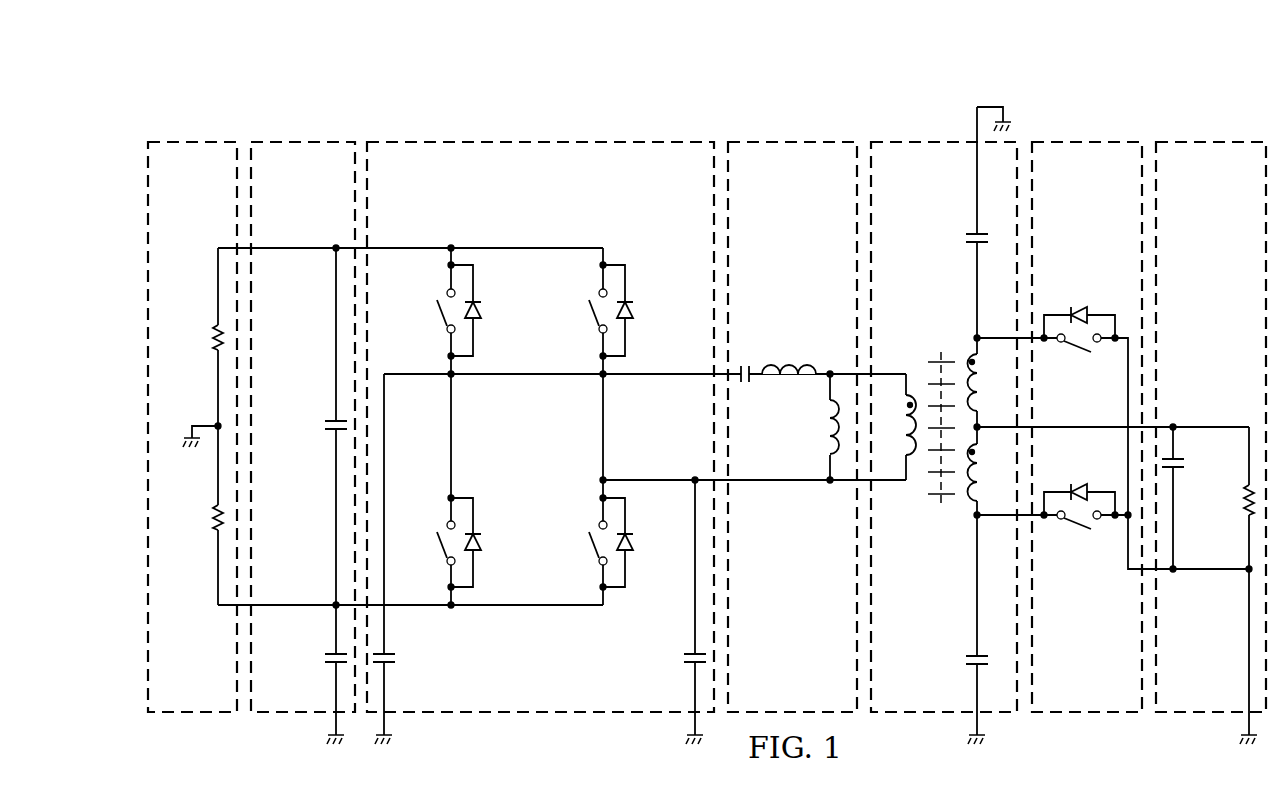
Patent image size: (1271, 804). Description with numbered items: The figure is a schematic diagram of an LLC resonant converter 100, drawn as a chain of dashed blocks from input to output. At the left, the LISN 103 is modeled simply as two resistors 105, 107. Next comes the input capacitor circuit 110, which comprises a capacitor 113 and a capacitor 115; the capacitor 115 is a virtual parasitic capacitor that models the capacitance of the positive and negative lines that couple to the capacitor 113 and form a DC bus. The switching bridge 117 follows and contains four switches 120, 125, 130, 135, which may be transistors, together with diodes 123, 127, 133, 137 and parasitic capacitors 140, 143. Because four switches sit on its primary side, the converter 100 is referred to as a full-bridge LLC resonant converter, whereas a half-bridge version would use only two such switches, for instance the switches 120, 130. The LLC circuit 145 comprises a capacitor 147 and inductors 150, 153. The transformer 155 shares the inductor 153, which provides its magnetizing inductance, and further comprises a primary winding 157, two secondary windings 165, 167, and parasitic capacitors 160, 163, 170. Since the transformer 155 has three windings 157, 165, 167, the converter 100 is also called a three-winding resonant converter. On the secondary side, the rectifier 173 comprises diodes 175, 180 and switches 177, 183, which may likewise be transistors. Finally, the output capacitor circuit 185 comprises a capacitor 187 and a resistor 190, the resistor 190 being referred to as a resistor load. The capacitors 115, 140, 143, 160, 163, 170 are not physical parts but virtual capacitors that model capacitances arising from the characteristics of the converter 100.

The LLC resonant converter 100 is at (590, 75).
The LISN 103 is at (192, 140).
The resistor 105 is at (216, 334).
The resistor 107 is at (216, 514).
The input capacitor circuit 110 is at (300, 140).
The capacitor 113 is at (326, 424).
The capacitor 115 is at (326, 657).
The switching bridge 117 is at (515, 140).
The switch 120 is at (438, 306).
The diode 123 is at (483, 308).
The switch 125 is at (590, 306).
The diode 127 is at (635, 308).
The switch 130 is at (438, 538).
The diode 133 is at (483, 540).
The switch 135 is at (590, 538).
The diode 137 is at (635, 540).
The capacitor 140 is at (395, 659).
The capacitor 143 is at (685, 657).
The LLC circuit 145 is at (795, 140).
The capacitor 147 is at (745, 366).
The inductor 150 is at (797, 366).
The inductor 153 is at (827, 428).
The transformer 155 is at (946, 140).
The winding 157 is at (903, 445).
The capacitor 160 is at (936, 348).
The capacitor 163 is at (970, 239).
The winding 165 is at (965, 360).
The winding 167 is at (965, 503).
The capacitor 170 is at (970, 659).
The rectifier 173 is at (1098, 140).
The diode 175 is at (1078, 306).
The switch 177 is at (1075, 353).
The diode 180 is at (1077, 484).
The switch 183 is at (1075, 531).
The output capacitor circuit 185 is at (1223, 140).
The capacitor 187 is at (1182, 464).
The resistor 190 is at (1243, 500).